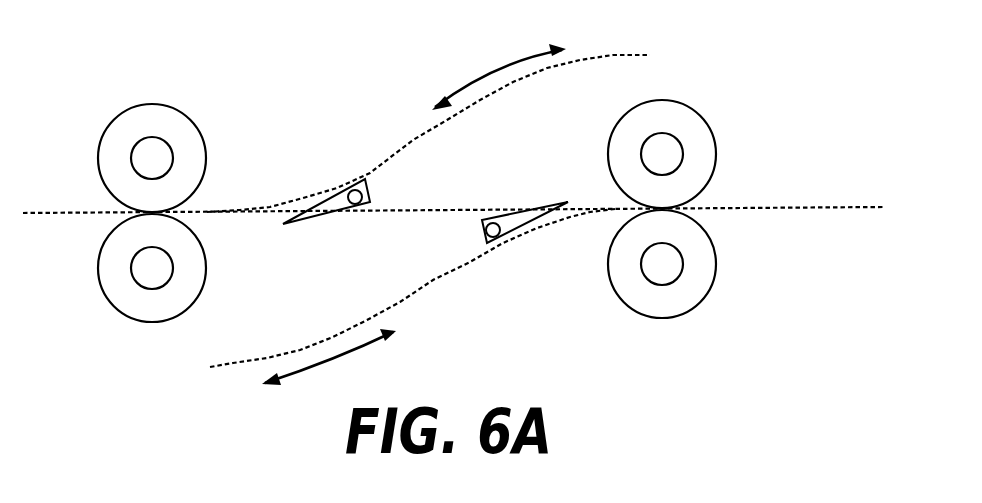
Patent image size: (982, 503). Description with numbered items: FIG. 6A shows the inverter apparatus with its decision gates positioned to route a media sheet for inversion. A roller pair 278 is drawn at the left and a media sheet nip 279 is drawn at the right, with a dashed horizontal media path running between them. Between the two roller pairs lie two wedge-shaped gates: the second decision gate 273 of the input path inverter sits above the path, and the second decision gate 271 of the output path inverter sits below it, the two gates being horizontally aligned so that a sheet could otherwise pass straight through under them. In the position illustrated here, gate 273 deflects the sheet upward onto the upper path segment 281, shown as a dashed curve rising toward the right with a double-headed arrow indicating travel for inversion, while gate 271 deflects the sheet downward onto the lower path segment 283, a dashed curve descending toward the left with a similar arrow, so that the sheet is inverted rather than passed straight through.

The first roller pair 278 is at (150, 92).
The media sheet nip 279 is at (671, 82).
The second decision gate 273 is at (333, 200).
The second decision gate 271 is at (523, 220).
The upper path segment 281 is at (510, 88).
The lower path segment 283 is at (323, 342).